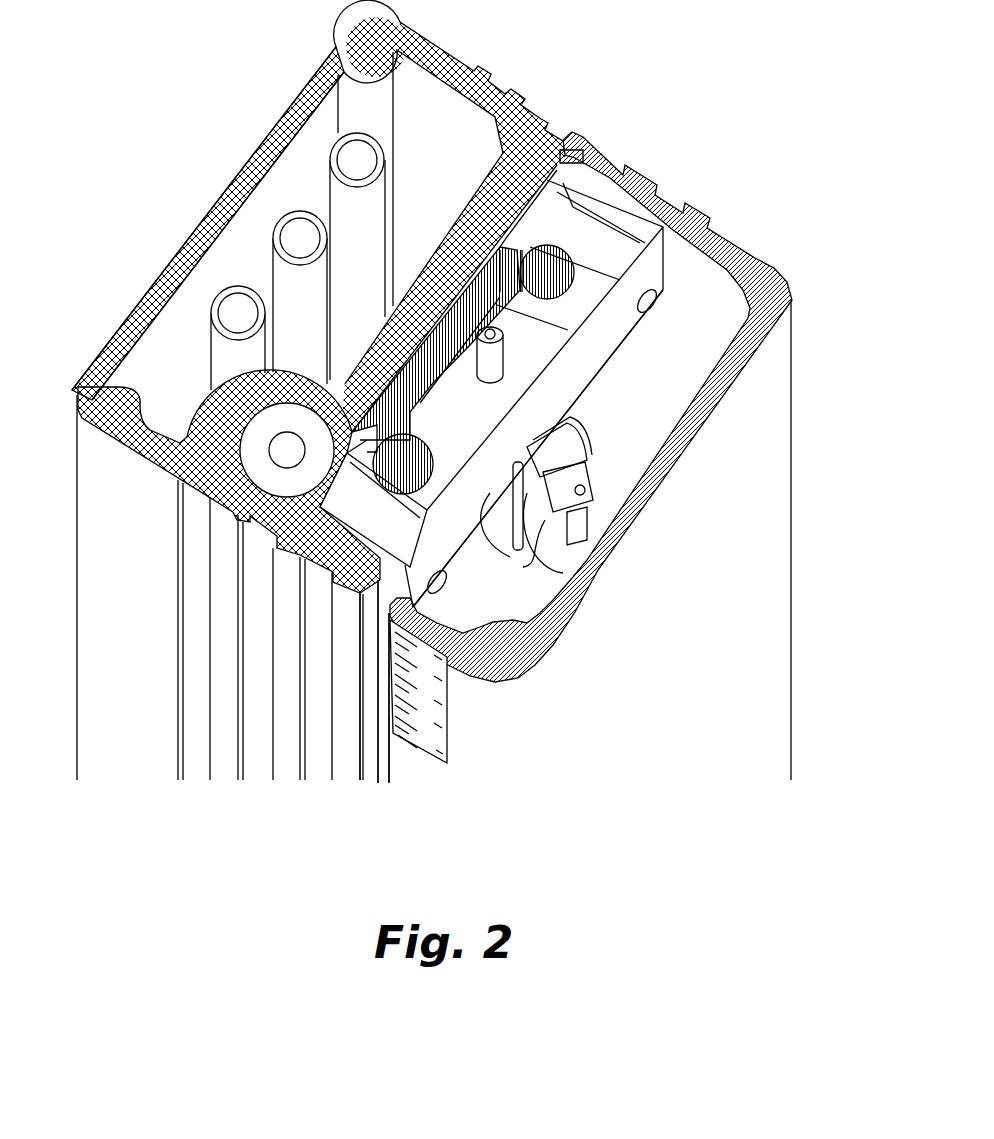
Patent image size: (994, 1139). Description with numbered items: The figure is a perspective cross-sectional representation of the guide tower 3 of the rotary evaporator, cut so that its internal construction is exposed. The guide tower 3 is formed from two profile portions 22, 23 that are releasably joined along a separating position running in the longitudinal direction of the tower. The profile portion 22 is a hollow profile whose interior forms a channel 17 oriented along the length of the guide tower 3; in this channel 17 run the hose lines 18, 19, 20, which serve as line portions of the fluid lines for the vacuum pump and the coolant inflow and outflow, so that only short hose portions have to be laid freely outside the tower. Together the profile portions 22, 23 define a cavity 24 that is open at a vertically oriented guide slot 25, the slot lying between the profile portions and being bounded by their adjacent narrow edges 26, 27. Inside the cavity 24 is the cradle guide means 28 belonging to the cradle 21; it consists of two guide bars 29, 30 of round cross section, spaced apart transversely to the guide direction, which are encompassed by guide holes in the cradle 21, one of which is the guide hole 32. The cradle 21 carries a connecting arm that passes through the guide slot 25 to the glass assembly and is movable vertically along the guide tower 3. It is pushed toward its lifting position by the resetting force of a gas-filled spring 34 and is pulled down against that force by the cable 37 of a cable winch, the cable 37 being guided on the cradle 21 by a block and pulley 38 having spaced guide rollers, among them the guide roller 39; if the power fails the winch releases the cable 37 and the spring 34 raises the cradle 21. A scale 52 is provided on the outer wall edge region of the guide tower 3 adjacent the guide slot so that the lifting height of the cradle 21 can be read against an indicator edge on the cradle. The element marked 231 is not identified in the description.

The guide tower 3 is at (670, 84).
The channel 17 is at (437, 124).
The hose line 18 is at (375, 238).
The hose line 19 is at (312, 324).
The hose line 20 is at (221, 379).
The cradle 21 is at (640, 361).
The profile portion 22 is at (246, 150).
The profile portion 23 is at (740, 234).
The cavity 24 is at (650, 438).
The guide slot 25 is at (372, 733).
The narrow edge 26 is at (370, 702).
The narrow edge 27 is at (387, 766).
The cradle guide means 28 is at (437, 346).
The guide bar 29 is at (561, 289).
The guide bar 30 is at (417, 480).
The guide hole 32 is at (436, 467).
The gas-filled spring 34 is at (262, 466).
The cable 37 is at (520, 597).
The block and pulley 38 is at (628, 478).
The guide roller 39 is at (598, 492).
The scale 52 is at (452, 742).
The boss 231 is at (569, 285).